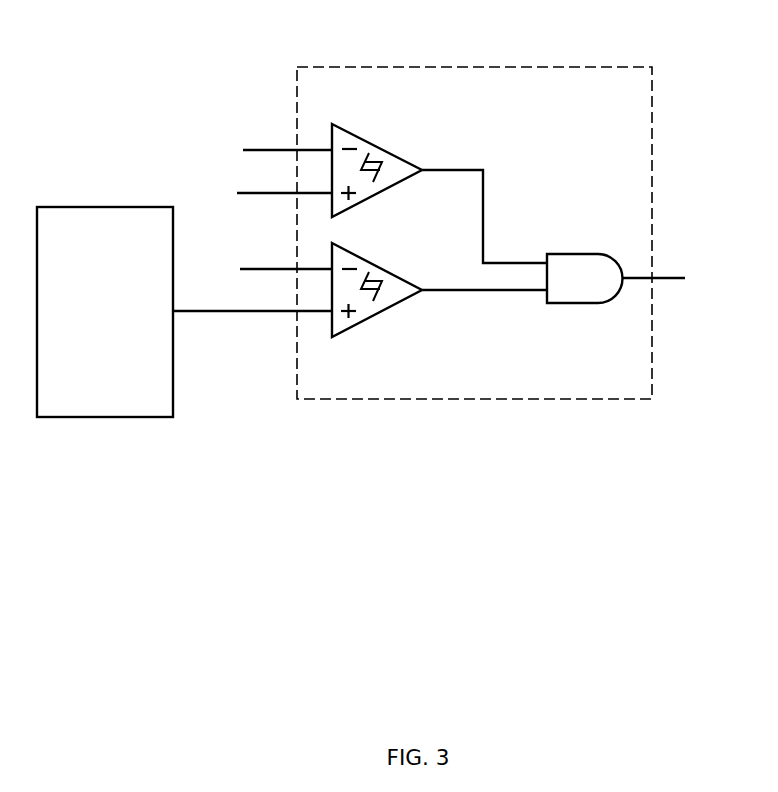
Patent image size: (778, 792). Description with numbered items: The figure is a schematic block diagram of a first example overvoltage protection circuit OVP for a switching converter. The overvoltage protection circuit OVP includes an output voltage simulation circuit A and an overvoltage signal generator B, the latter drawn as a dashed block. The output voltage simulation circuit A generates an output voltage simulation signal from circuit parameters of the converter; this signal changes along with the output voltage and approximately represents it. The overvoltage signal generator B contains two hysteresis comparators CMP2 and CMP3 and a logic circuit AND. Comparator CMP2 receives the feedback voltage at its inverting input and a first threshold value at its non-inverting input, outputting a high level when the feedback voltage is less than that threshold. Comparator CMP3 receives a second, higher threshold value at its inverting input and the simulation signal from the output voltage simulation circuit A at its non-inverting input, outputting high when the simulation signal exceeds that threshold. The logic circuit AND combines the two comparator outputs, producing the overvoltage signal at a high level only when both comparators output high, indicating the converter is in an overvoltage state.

The overvoltage protection circuit OVP is at (192, 68).
The output voltage simulation circuit A is at (133, 207).
The overvoltage signal generator B is at (652, 171).
The comparator CMP2 is at (377, 154).
The comparator CMP3 is at (377, 306).
The logic circuit AND is at (585, 296).